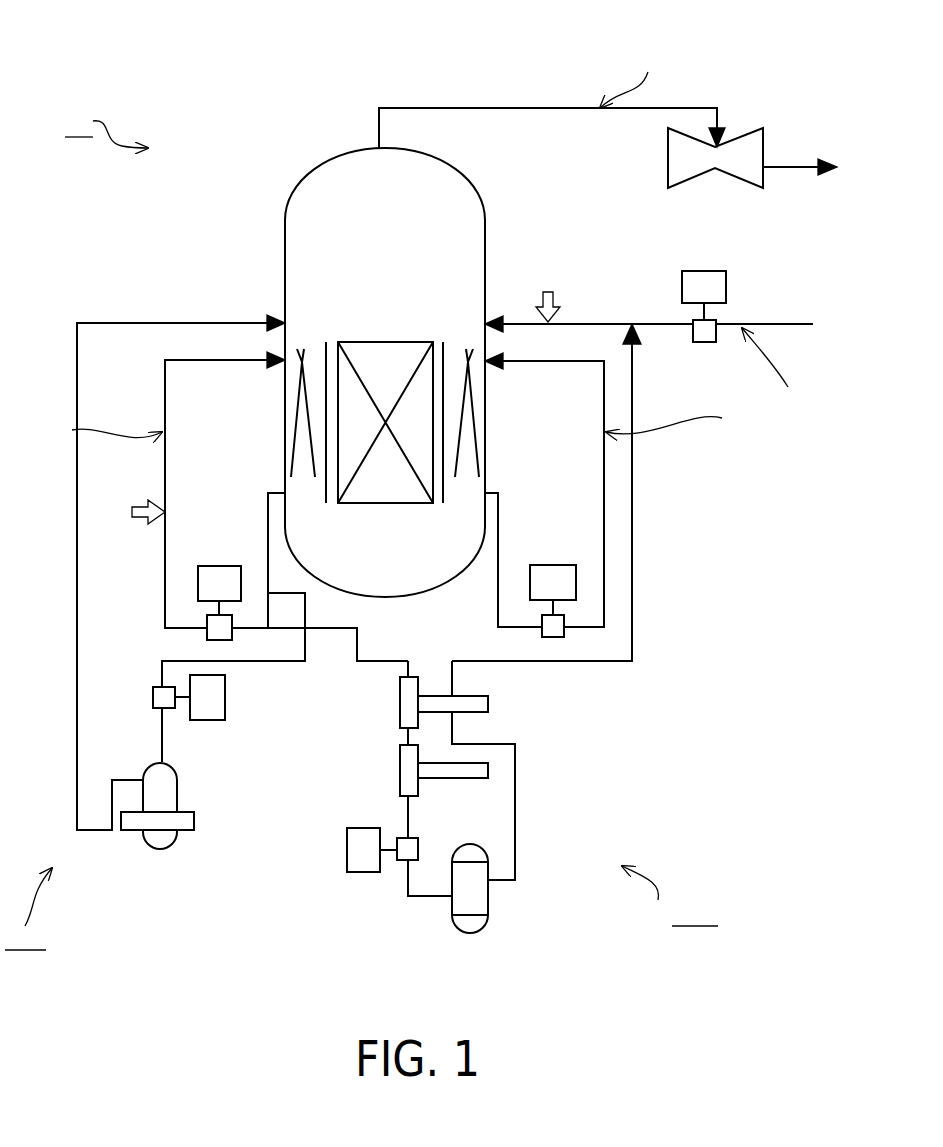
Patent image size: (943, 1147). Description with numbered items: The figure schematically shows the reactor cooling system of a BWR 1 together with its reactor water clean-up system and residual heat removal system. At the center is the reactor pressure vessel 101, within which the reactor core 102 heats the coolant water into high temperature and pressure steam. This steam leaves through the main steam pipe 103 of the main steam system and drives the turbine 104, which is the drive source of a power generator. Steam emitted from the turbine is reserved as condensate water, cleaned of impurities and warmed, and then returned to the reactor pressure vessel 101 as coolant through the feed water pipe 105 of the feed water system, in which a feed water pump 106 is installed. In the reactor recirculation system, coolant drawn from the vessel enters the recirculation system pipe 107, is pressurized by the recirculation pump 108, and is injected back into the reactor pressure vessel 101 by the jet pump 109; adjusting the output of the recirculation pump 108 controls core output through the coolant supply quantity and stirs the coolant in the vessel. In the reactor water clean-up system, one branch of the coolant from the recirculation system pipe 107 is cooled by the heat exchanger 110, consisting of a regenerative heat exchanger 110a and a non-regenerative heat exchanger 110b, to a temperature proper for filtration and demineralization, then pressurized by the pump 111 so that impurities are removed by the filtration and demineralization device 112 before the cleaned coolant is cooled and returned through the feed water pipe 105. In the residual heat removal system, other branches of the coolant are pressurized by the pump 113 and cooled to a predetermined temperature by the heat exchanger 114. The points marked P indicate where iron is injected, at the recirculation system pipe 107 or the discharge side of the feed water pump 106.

The BWR 1 is at (86, 58).
The reactor pressure vessel 101 is at (294, 192).
The reactor core 102 is at (380, 340).
The main steam pipe 103 is at (517, 108).
The turbine 104 is at (668, 162).
The feed water pipe 105 is at (582, 323).
The feed water pump 106 is at (727, 283).
The recirculation system pipe 107 is at (268, 510).
The recirculation pump 108 is at (212, 566).
The jet pump 109 is at (302, 350).
The heat exchanger 110 is at (385, 770).
The regenerative heat exchanger 110a is at (400, 708).
The non-regenerative heat exchanger 110b is at (400, 770).
The pump 111 is at (347, 853).
The filtration and demineralization device 112 is at (490, 902).
The pump 113 is at (226, 690).
The heat exchanger 114 is at (178, 791).